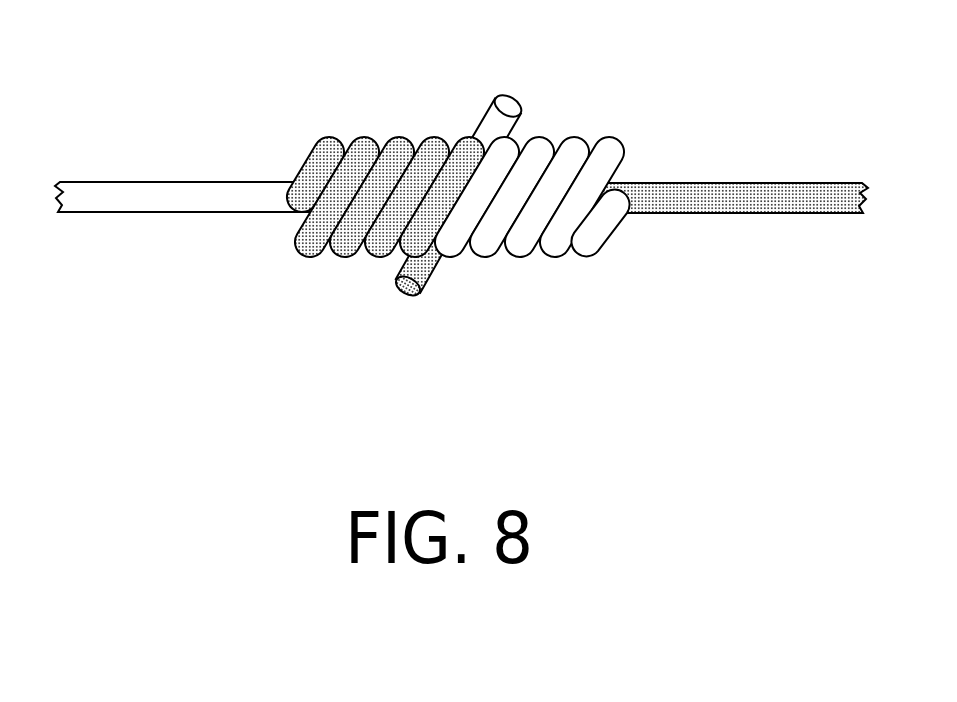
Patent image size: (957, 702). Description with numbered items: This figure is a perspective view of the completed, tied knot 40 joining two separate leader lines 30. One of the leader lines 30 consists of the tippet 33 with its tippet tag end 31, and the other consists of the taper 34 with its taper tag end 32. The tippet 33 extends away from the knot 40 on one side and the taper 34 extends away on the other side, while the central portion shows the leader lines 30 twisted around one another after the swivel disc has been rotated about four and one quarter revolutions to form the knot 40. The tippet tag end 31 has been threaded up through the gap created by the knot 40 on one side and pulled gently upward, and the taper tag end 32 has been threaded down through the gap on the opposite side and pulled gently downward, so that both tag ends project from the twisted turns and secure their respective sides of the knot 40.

The separate leader lines 30 is at (461, 197).
The tippet tag end 31 is at (518, 118).
The taper tag end 32 is at (429, 284).
The tippet 33 is at (195, 182).
The taper 34 is at (747, 183).
The knot 40 is at (461, 174).